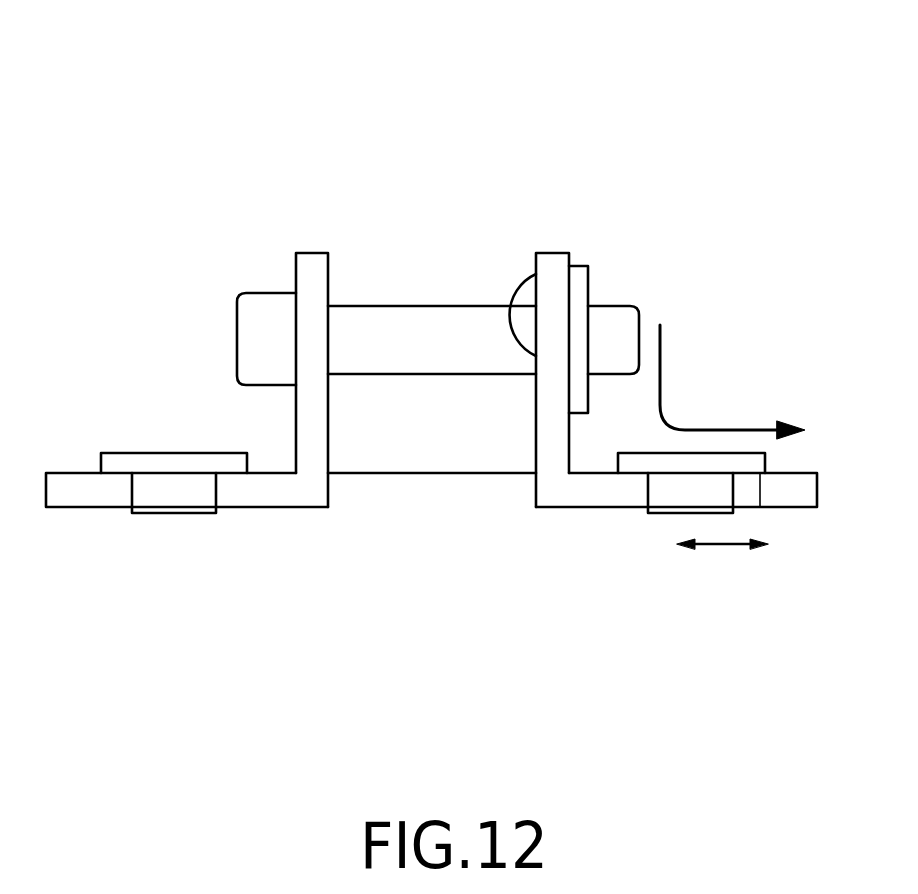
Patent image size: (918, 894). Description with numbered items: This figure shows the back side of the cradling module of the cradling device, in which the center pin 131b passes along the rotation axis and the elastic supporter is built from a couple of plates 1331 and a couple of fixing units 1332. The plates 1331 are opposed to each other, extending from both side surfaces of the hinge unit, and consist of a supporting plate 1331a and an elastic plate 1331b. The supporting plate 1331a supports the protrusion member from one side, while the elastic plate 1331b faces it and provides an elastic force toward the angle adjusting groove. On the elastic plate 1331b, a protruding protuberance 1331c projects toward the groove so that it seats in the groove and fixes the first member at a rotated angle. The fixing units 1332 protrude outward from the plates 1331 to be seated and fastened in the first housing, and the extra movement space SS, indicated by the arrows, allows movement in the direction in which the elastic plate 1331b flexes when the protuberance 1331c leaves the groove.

The plates 1331 is at (460, 276).
The supporting plate 1331a is at (313, 265).
The elastic plate 1331b is at (555, 267).
The protruding protuberance 1331c is at (513, 327).
The fixing units 1332 is at (548, 488).
The center pin 131b is at (248, 345).
The extra movement space SS is at (750, 493).